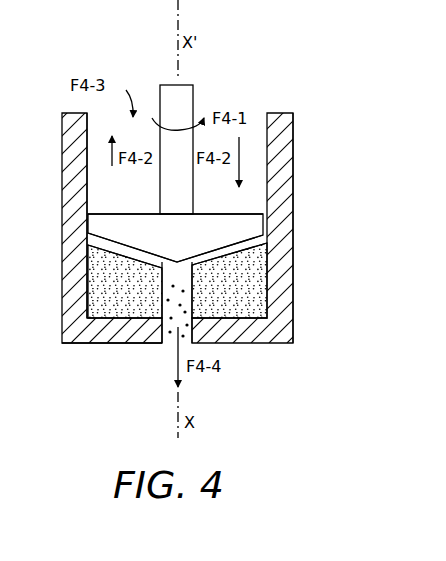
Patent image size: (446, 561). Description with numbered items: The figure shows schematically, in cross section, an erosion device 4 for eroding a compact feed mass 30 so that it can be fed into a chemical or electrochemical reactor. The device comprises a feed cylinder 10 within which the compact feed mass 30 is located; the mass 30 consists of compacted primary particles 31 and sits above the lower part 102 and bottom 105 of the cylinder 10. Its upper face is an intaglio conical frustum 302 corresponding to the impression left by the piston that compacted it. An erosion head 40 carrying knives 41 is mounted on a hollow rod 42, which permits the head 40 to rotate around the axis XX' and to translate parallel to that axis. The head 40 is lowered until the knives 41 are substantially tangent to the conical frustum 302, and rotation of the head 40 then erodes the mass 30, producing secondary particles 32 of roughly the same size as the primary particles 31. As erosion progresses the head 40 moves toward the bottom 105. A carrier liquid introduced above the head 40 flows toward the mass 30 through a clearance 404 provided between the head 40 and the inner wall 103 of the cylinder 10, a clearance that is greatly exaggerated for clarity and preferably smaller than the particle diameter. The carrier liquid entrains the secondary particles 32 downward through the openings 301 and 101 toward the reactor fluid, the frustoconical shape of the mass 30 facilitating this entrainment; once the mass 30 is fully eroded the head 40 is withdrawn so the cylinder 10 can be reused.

The erosion device 4 is at (291, 107).
The cylinder 10 is at (293, 151).
The inner wall 103 is at (88, 133).
The lower part 102 is at (293, 290).
The bottom 105 is at (78, 344).
The opening 101 is at (162, 344).
The hollow rod 42 is at (184, 103).
The head 40 is at (211, 214).
The clearance 404 is at (89, 215).
The knives 41 is at (120, 244).
The primary particles 31 is at (146, 294).
The compact feed mass 30 is at (250, 310).
The opening 301 is at (162, 272).
The conical frustum 302 is at (263, 250).
The secondary particles 32 is at (168, 297).